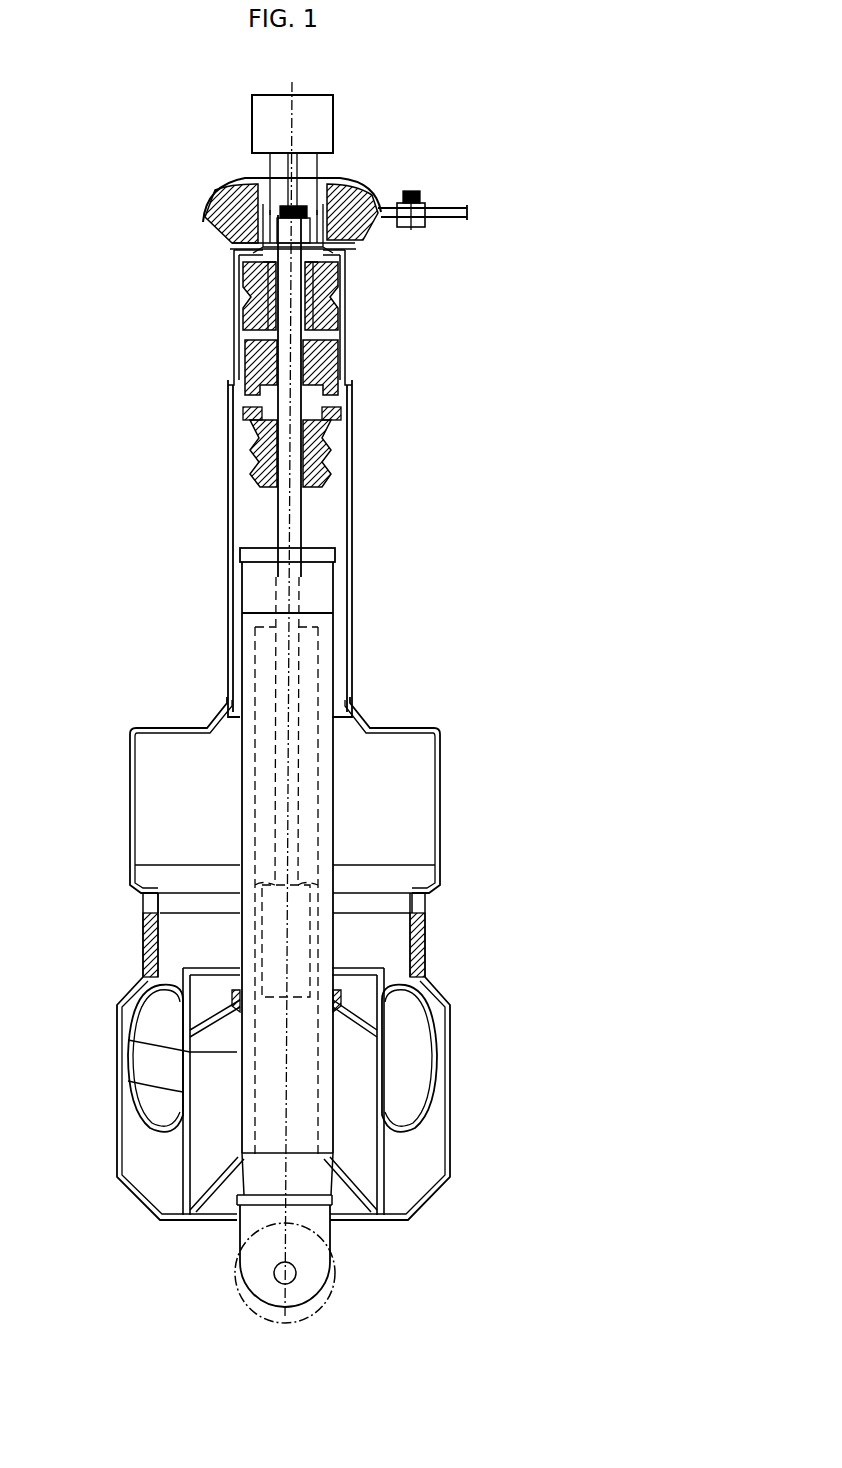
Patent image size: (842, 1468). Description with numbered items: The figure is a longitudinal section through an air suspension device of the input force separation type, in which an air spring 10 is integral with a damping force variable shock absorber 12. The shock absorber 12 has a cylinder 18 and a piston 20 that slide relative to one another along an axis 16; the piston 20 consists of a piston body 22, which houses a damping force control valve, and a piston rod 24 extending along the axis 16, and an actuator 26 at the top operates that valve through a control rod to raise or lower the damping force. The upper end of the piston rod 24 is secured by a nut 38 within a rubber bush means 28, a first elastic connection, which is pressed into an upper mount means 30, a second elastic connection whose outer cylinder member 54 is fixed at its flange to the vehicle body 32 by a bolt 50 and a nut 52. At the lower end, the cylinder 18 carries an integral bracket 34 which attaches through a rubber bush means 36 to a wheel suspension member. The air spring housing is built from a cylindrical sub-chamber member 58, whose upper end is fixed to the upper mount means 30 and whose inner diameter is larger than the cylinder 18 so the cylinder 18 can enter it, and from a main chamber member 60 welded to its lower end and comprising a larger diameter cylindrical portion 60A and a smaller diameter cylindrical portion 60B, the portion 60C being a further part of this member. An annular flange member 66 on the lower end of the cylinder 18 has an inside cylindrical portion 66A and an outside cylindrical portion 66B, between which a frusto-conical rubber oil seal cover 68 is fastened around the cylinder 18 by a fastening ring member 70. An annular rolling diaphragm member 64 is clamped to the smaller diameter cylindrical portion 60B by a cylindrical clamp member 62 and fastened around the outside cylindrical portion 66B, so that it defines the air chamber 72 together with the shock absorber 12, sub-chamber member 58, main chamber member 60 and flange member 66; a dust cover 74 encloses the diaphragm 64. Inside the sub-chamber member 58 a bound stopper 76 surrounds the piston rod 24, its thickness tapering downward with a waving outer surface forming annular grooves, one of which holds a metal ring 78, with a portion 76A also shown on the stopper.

The air spring 10 is at (99, 723).
The shock absorber 12 is at (322, 546).
The axis 16 is at (287, 539).
The cylinder 18 is at (333, 646).
The piston 20 is at (298, 842).
The piston body 22 is at (256, 910).
The piston rod 24 is at (303, 513).
The actuator 26 is at (333, 130).
The rubber bush means 28 is at (238, 284).
The upper mount means 30 is at (212, 190).
The vehicle body 32 is at (468, 186).
The bracket 34 is at (313, 1253).
The rubber bush means 36 is at (236, 1277).
The nut 38 is at (342, 286).
The bolt 50 is at (418, 229).
The nut 52 is at (421, 201).
The outer cylinder member 54 is at (327, 203).
The sub-chamber member 58 is at (229, 432).
The main chamber member 60 is at (130, 817).
The larger diameter cylindrical portion 60A is at (441, 800).
The smaller diameter cylindrical portion 60B is at (427, 915).
The housing rib 60C is at (222, 1176).
The cylindrical clamp member 62 is at (142, 920).
The annular rolling diaphragm member 64 is at (436, 1090).
The annular flange member 66 is at (380, 1188).
The inside cylindrical portion 66A is at (128, 1040).
The outside cylindrical portion 66B is at (128, 1081).
The oil seal cover 68 is at (366, 1022).
The fastening ring member 70 is at (233, 1008).
The air chamber 72 is at (407, 843).
The dust cover 74 is at (450, 1143).
The bound stopper 76 is at (330, 366).
The washer 76A is at (341, 413).
The metal ring 78 is at (344, 433).